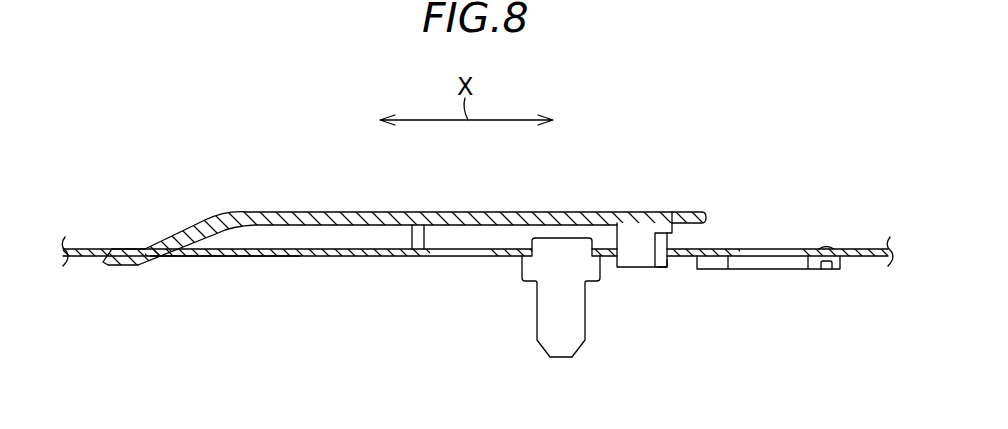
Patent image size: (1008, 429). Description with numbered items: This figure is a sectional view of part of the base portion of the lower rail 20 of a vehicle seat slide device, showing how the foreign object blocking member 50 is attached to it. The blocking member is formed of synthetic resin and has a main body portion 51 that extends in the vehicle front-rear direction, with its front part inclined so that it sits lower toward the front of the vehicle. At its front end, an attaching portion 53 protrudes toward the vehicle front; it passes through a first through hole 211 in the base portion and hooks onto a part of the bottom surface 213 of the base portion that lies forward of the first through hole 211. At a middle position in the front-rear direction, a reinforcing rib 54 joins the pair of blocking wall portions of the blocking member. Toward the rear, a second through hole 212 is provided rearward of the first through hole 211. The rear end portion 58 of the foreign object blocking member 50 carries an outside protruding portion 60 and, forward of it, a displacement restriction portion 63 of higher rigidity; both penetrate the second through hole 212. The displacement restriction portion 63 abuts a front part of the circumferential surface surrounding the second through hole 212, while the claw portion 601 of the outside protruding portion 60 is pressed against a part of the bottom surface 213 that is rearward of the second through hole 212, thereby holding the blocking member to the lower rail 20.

The lower rail 20 is at (806, 248).
The first through hole 211 is at (181, 256).
The second through hole 212 is at (626, 266).
The bottom surface 213 is at (862, 257).
The foreign object blocking member 50 is at (272, 210).
The main body portion 51 is at (346, 210).
The attaching portion 53 is at (110, 266).
The reinforcing rib 54 is at (413, 234).
The rear end portion 58 is at (692, 211).
The outside protruding portion 60 is at (670, 236).
The claw portion 601 is at (668, 268).
The displacement restriction portion 63 is at (641, 235).